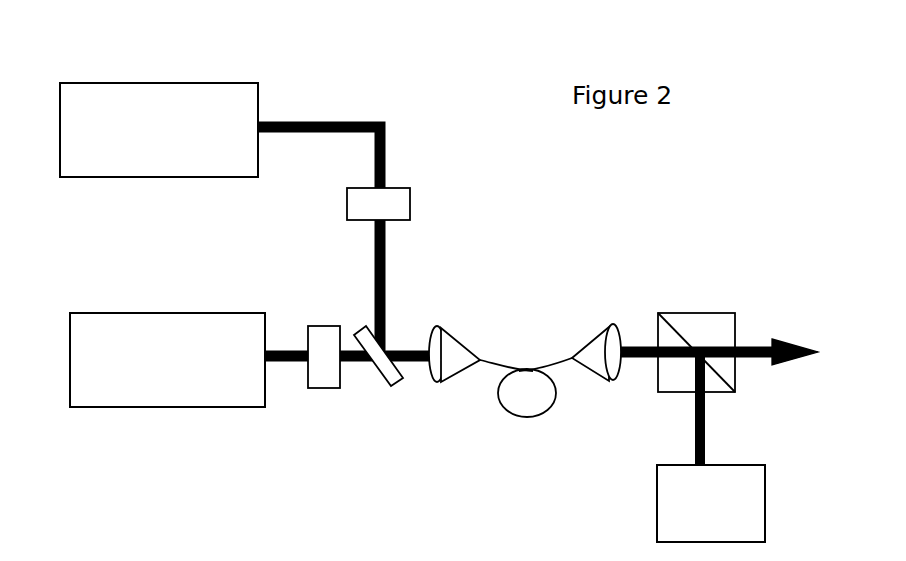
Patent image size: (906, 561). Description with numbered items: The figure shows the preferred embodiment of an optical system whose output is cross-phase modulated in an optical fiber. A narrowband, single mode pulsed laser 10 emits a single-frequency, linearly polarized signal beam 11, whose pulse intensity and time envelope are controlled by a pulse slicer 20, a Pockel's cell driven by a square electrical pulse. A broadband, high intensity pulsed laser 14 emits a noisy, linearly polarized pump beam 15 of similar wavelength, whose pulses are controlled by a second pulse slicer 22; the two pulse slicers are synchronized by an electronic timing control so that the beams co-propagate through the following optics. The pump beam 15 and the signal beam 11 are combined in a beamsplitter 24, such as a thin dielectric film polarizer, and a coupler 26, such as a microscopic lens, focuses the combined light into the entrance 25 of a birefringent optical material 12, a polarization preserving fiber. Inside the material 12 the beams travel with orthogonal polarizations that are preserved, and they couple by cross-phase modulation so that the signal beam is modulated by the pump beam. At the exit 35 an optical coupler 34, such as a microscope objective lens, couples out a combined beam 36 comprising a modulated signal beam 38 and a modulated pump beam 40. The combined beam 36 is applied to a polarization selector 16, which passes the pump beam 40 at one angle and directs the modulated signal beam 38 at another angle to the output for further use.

The narrowband, single mode pulsed laser 10 is at (102, 83).
The signal beam 11 is at (383, 140).
The pulse slicer 20 is at (347, 203).
The broadband, high intensity pulsed laser 14 is at (98, 313).
The pump beam 15 is at (283, 363).
The second pulse slicer 22 is at (323, 326).
The beamsplitter 24 is at (385, 378).
The entrance 25 is at (438, 326).
The coupler 26 is at (457, 340).
The birefringent optical material 12 is at (533, 402).
The optical coupler 34 is at (593, 338).
The exit 35 is at (614, 323).
The combined beam 36 is at (638, 347).
The polarization selector 16 is at (730, 310).
The modulated pump beam 40 is at (748, 343).
The modulated signal beam 38 is at (703, 417).